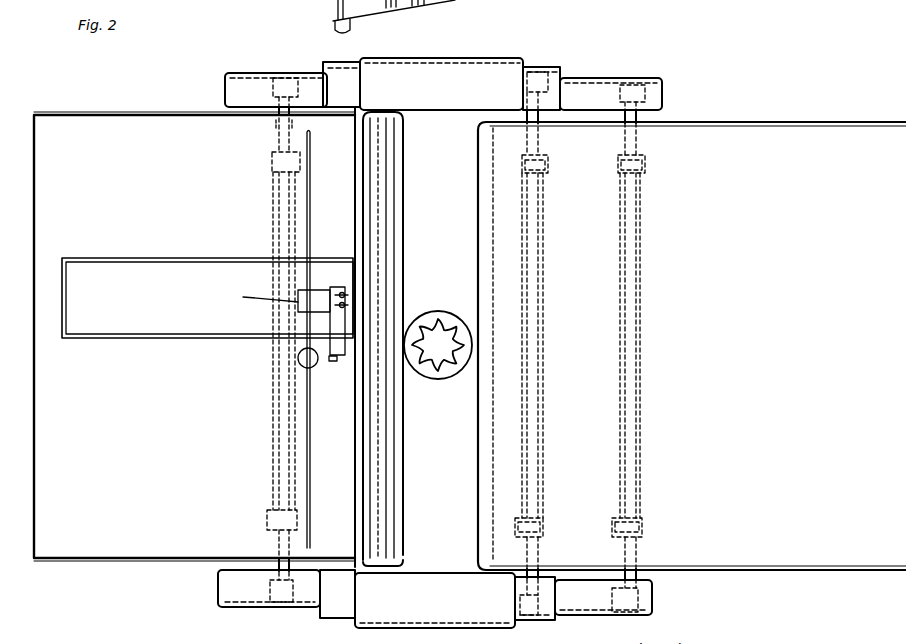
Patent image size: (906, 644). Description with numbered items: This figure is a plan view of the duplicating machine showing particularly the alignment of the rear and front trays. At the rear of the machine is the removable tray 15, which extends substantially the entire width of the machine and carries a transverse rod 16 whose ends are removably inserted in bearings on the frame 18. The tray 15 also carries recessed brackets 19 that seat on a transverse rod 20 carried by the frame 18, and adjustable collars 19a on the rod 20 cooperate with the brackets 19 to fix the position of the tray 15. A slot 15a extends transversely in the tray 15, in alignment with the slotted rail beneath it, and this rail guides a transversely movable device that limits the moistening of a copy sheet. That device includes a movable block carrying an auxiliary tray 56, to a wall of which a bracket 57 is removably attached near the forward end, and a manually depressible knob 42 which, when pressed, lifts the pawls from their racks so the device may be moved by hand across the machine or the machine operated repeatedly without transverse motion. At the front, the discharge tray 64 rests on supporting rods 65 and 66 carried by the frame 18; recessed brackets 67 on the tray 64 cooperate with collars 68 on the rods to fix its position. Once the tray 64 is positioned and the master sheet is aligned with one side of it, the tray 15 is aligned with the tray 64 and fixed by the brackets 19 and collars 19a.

The removable tray 15 is at (127, 113).
The slot 15a is at (308, 432).
The transverse rod 16 is at (355, 197).
The frame 18 is at (488, 60).
The recessed brackets 19 is at (272, 150).
The adjustable collars 19a is at (270, 162).
The transverse rod 20 is at (275, 131).
The knob 42 is at (316, 366).
The auxiliary tray 56 is at (220, 338).
The bracket 57 is at (341, 288).
The discharge tray 64 is at (736, 122).
The supporting rod 65 is at (544, 136).
The supporting rod 66 is at (642, 136).
The recessed brackets 67 is at (548, 170).
The collars 68 is at (549, 158).